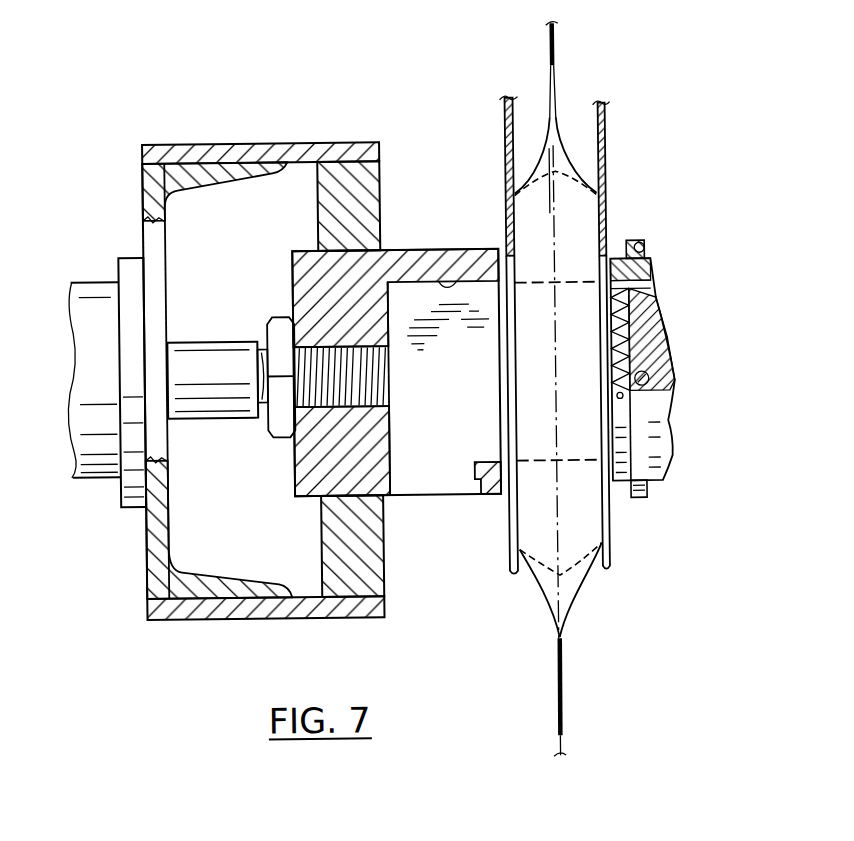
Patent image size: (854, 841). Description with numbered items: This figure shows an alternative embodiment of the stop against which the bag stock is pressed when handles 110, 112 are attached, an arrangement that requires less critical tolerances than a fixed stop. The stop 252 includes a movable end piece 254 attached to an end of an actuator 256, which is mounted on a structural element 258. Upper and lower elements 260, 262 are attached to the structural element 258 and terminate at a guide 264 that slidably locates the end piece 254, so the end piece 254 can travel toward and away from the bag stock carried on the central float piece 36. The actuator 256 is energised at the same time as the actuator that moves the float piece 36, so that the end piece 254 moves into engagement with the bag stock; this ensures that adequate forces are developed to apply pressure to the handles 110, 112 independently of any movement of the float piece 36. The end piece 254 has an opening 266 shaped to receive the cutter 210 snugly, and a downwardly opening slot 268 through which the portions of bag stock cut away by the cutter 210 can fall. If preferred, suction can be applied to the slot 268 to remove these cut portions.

The central float piece 36 is at (580, 585).
The handle 110 is at (510, 401).
The handle 112 is at (608, 435).
The cutter 210 is at (647, 392).
The stop 252 is at (350, 623).
The movable end piece 254 is at (405, 256).
The actuator 256 is at (93, 472).
The structural element 258 is at (150, 570).
The upper element 260 is at (307, 150).
The lower element 262 is at (232, 618).
The guide 264 is at (383, 549).
The opening 266 is at (456, 282).
The downwardly opening slot 268 is at (464, 493).